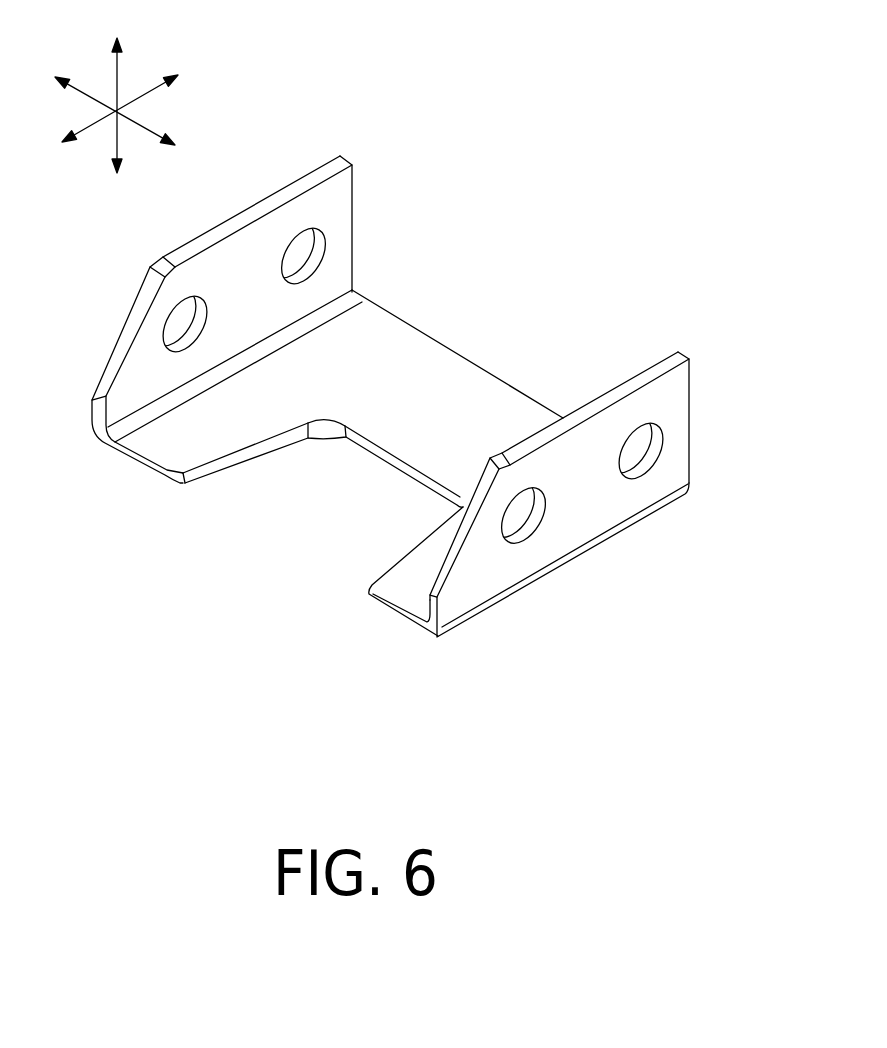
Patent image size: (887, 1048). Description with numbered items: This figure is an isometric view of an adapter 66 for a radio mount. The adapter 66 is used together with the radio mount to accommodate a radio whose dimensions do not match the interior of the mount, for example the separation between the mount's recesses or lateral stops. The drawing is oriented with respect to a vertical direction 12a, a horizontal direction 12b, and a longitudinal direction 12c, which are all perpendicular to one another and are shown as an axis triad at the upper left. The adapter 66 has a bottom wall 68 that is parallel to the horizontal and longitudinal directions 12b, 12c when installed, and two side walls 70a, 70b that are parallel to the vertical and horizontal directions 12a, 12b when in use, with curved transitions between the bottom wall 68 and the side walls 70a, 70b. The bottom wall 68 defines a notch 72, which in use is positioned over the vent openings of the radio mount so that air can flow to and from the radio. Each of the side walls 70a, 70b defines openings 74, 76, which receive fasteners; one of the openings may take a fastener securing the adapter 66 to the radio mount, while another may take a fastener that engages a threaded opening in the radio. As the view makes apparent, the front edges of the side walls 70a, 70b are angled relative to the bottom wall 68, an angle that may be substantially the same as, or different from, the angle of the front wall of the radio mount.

The vertical direction 12a is at (118, 68).
The horizontal direction 12b is at (83, 89).
The longitudinal direction 12c is at (153, 90).
The adapter 66 is at (423, 397).
The bottom wall 68 is at (456, 372).
The side wall 70a is at (340, 207).
The side wall 70b is at (678, 424).
The notch 72 is at (283, 442).
The opening 74 is at (196, 330).
The opening 76 is at (310, 268).